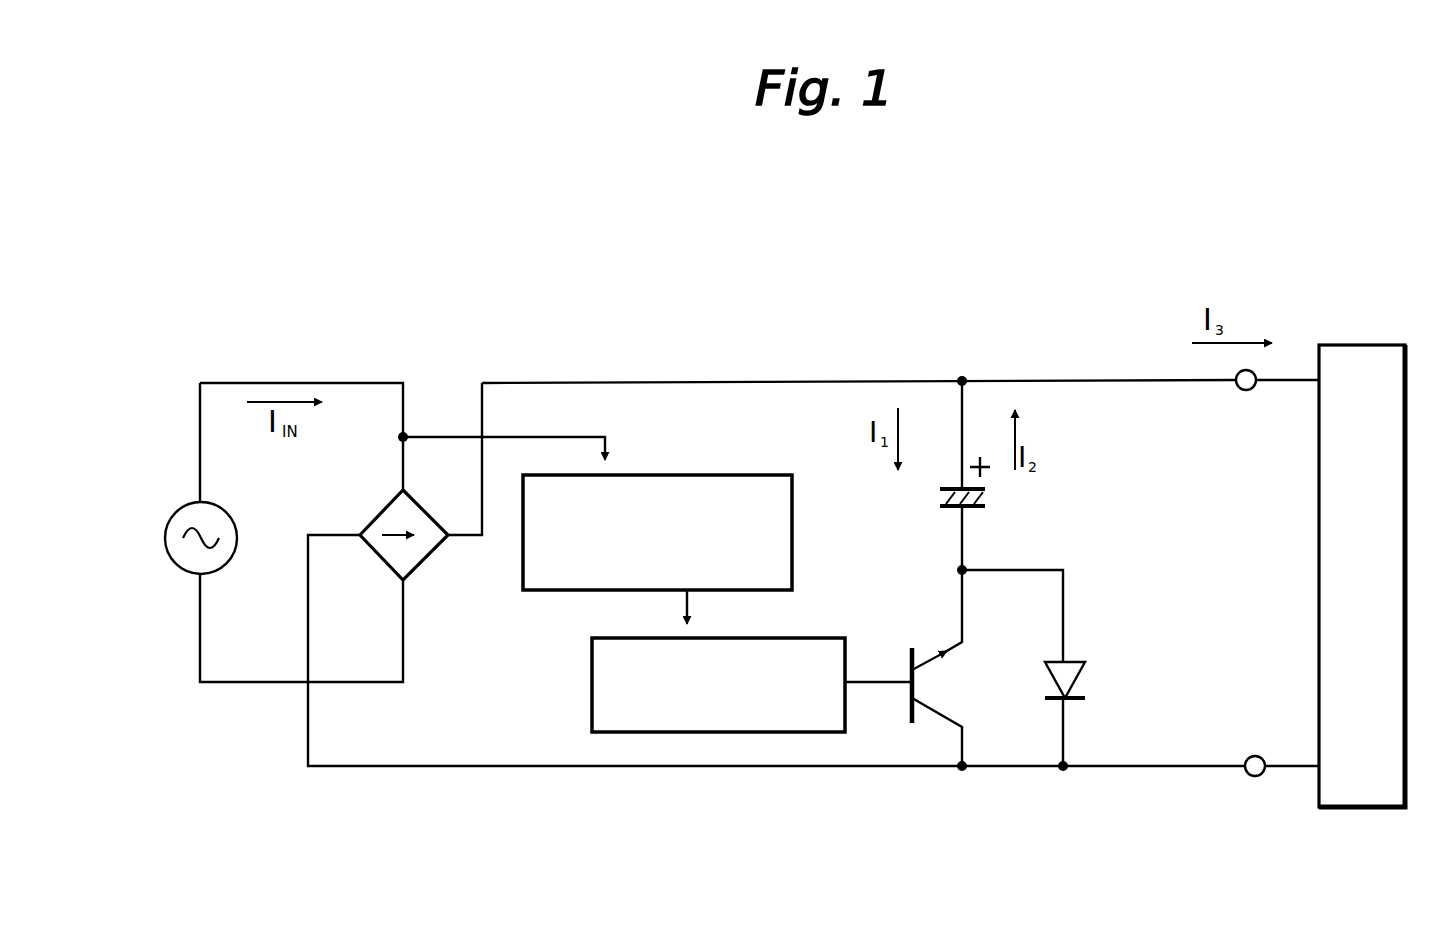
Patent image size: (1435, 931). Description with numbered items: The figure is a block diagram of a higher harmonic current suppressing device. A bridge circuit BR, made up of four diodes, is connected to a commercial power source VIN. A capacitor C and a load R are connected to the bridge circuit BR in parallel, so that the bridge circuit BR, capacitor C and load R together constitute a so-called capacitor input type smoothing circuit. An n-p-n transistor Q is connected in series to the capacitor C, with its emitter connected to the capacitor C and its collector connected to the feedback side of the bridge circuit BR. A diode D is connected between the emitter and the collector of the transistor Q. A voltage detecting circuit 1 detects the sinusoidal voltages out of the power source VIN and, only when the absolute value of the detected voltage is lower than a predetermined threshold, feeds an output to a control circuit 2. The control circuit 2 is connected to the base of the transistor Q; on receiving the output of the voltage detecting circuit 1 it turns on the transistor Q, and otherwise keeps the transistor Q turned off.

The voltage detecting circuit 1 is at (697, 473).
The control circuit 2 is at (792, 637).
The commercial power source VIN is at (256, 532).
The bridge circuit BR is at (412, 548).
The n-p-n transistor Q is at (910, 668).
The capacitor C is at (979, 485).
The diode D is at (1039, 668).
The load R is at (1362, 558).